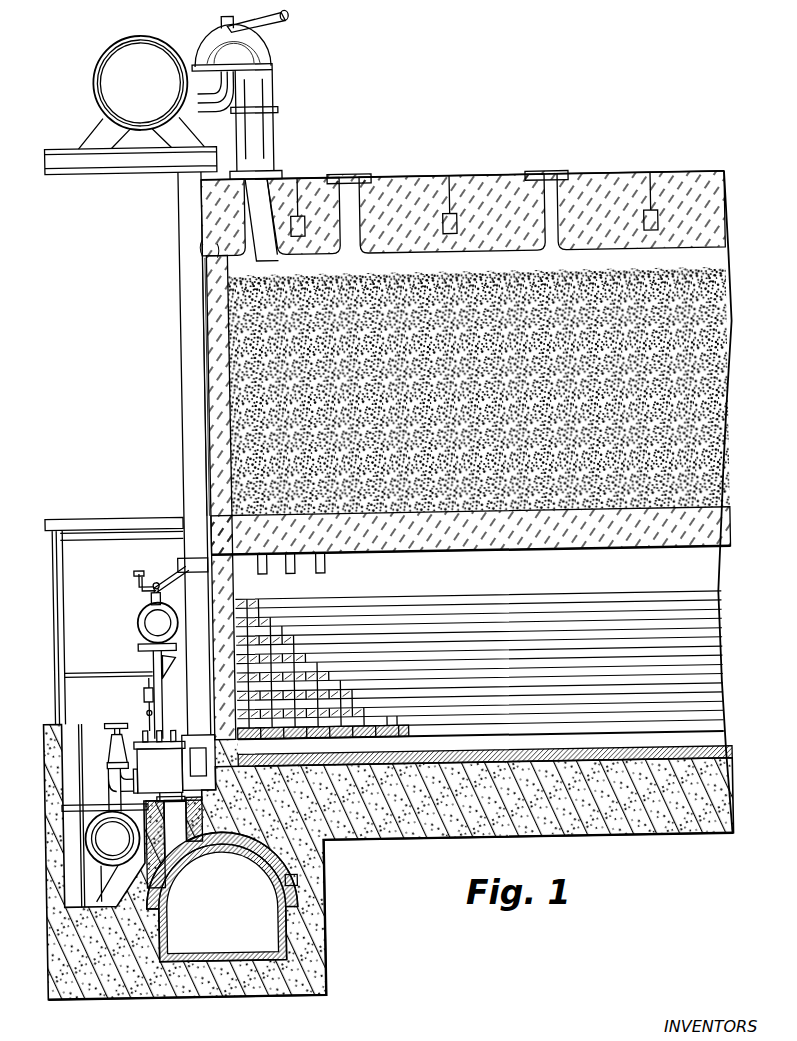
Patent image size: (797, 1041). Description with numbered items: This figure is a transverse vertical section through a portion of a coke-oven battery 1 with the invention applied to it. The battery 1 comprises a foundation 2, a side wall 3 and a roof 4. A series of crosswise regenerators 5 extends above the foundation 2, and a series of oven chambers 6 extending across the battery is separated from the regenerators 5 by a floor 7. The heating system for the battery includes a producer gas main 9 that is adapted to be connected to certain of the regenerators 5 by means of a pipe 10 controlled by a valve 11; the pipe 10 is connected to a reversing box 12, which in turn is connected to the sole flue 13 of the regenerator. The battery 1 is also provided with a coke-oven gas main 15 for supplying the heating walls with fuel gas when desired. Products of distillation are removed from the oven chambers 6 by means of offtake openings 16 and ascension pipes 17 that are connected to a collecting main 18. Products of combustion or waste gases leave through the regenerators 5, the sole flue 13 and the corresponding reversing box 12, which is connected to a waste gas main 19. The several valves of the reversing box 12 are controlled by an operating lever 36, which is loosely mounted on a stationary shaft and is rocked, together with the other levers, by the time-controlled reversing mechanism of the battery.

The coke-oven battery 1 is at (114, 401).
The foundation 2 is at (676, 826).
The side wall 3 is at (206, 517).
The roof 4 is at (499, 184).
The regenerators 5 is at (706, 629).
The oven chambers 6 is at (706, 383).
The floor 7 is at (706, 528).
The producer gas main 9 is at (113, 866).
The pipe 10 is at (114, 787).
The valve 11 is at (106, 746).
The reversing box 12 is at (175, 766).
The sole flue 13 is at (393, 750).
The coke-oven gas main 15 is at (137, 624).
The offtake openings 16 is at (252, 225).
The ascension pipes 17 is at (268, 96).
The collecting main 18 is at (100, 94).
The waste gas main 19 is at (230, 945).
The operating lever 36 is at (136, 705).